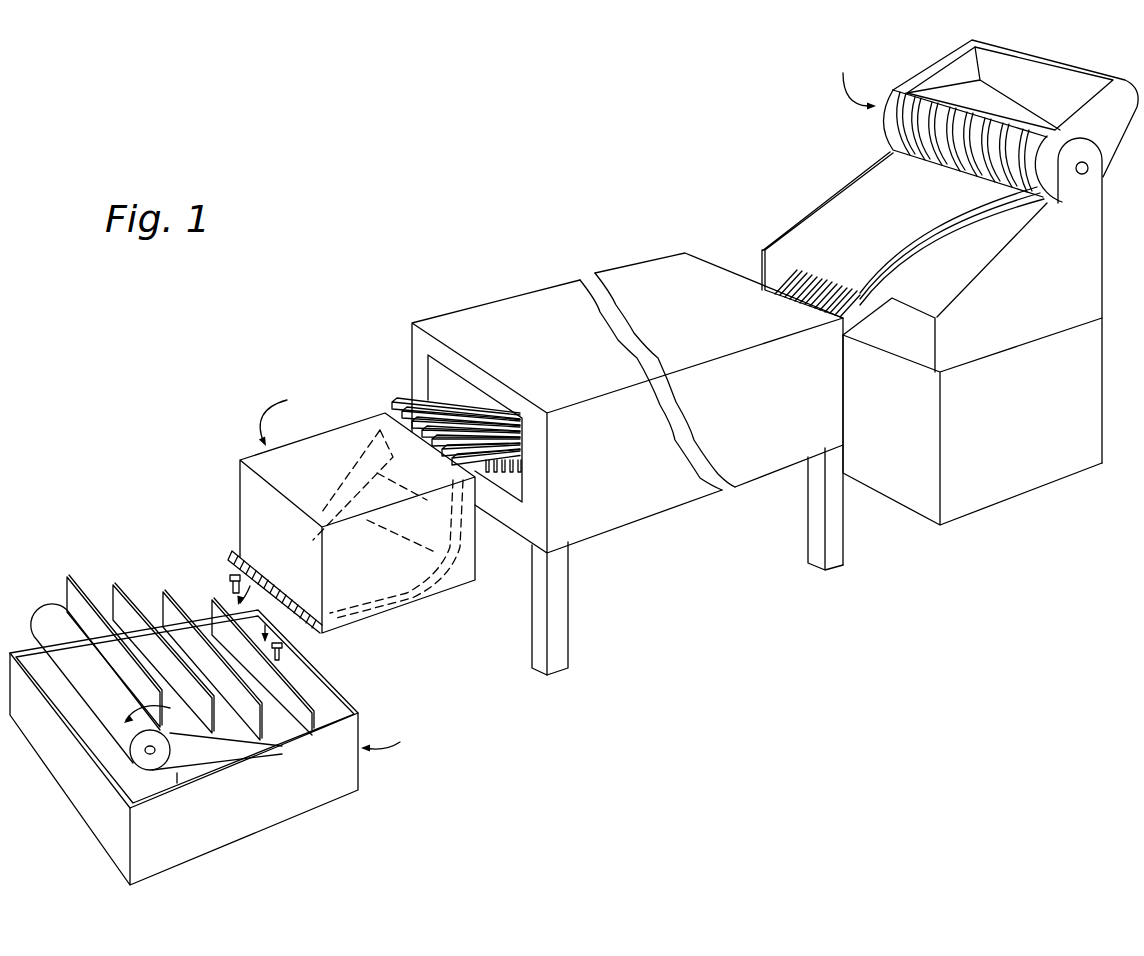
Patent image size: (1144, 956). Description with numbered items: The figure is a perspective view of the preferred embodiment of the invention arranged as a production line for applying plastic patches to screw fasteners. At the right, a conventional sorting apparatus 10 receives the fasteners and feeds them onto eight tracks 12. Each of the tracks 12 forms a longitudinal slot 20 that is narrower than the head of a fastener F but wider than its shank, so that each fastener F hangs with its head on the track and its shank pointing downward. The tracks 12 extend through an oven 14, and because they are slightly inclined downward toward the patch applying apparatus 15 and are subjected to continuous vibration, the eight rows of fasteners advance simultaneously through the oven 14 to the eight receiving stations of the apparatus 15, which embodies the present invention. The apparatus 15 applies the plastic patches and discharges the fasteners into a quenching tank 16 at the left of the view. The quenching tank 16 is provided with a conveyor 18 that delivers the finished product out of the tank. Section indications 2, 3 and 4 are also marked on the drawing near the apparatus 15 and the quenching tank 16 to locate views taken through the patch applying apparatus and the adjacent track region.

The section line 2- 2 is at (392, 634).
The section line 3- 3 is at (503, 410).
The section line 4- 4 is at (273, 494).
The sorting apparatus 10 is at (1060, 277).
The tracks 12 is at (840, 298).
The oven 14 is at (627, 464).
The apparatus 15 is at (463, 589).
The quenching tank 16 is at (227, 744).
The conveyor 18 is at (128, 596).
The longitudinal slot 20 is at (455, 450).
The fastener F is at (231, 578).